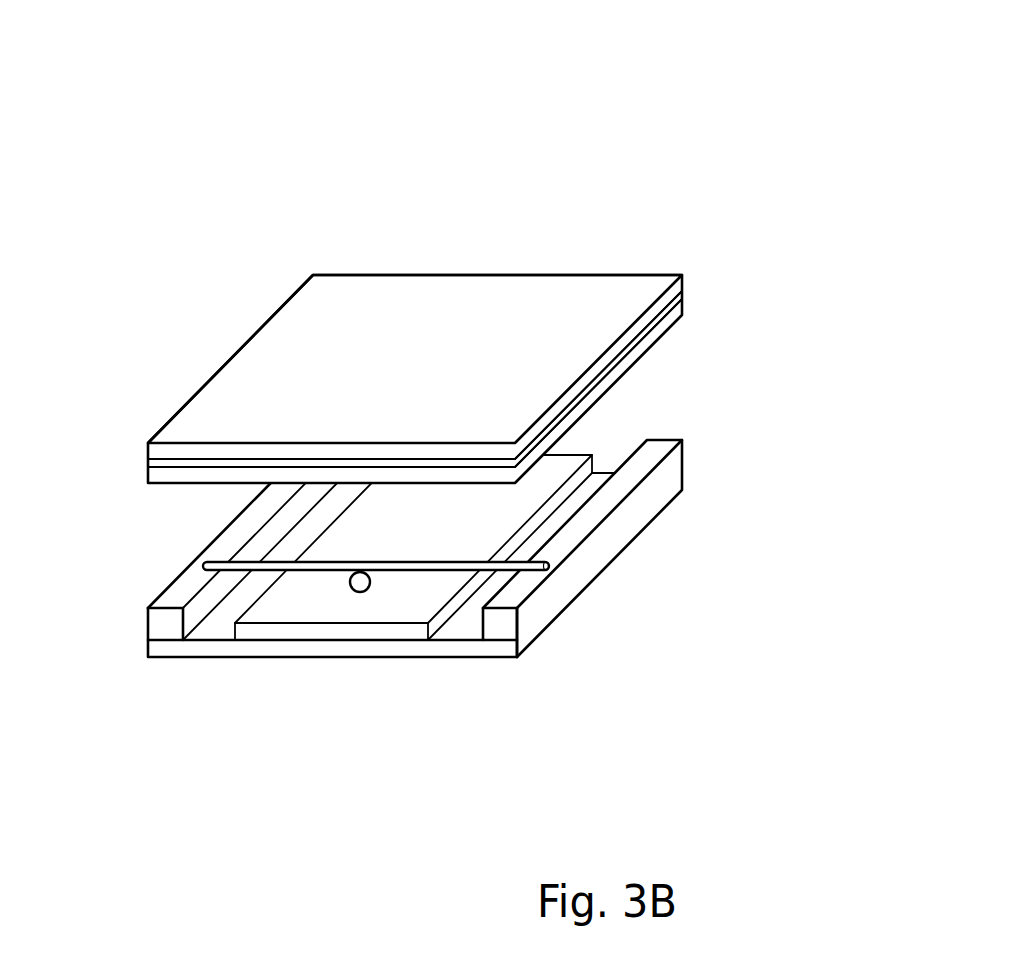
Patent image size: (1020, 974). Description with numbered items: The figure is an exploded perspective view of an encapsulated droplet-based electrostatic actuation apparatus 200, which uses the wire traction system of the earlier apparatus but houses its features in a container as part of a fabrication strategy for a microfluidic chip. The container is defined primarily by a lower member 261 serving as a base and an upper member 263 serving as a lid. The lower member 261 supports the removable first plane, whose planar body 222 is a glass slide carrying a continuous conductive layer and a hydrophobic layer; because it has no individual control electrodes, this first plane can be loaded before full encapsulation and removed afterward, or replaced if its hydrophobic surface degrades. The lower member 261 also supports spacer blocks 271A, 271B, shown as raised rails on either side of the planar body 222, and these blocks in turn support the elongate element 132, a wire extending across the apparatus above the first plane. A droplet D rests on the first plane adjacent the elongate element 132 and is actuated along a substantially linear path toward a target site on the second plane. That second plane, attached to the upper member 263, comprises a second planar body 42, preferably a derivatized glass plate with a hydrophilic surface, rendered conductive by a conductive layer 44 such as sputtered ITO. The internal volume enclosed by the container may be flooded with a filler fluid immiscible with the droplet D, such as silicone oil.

The encapsulated droplet-based electrostatic actuation apparatus 200 is at (426, 418).
The upper member 263 is at (684, 277).
The conductive layer 44 is at (683, 292).
The second planar body 42 is at (683, 316).
The elongate element 132 is at (552, 566).
The spacer block 271A is at (158, 629).
The spacer block 271B is at (533, 620).
The planar body 222 is at (290, 632).
The lower member 261 is at (410, 648).
The droplet D is at (356, 584).